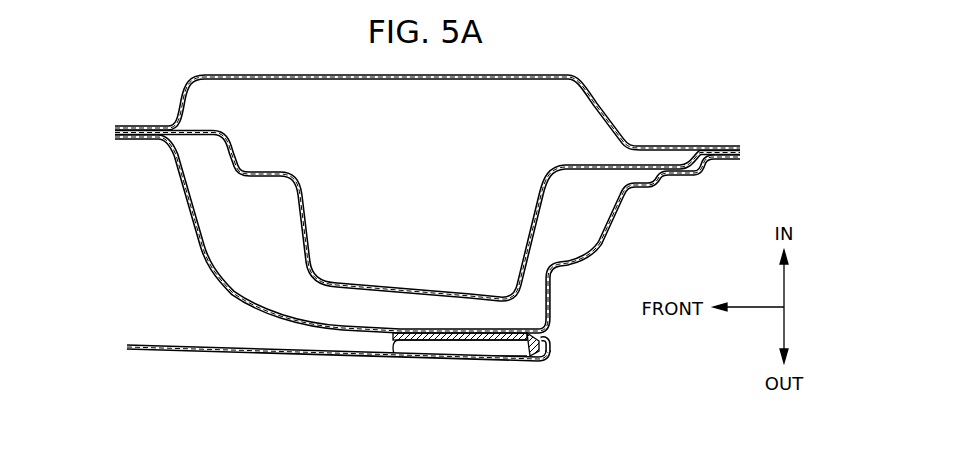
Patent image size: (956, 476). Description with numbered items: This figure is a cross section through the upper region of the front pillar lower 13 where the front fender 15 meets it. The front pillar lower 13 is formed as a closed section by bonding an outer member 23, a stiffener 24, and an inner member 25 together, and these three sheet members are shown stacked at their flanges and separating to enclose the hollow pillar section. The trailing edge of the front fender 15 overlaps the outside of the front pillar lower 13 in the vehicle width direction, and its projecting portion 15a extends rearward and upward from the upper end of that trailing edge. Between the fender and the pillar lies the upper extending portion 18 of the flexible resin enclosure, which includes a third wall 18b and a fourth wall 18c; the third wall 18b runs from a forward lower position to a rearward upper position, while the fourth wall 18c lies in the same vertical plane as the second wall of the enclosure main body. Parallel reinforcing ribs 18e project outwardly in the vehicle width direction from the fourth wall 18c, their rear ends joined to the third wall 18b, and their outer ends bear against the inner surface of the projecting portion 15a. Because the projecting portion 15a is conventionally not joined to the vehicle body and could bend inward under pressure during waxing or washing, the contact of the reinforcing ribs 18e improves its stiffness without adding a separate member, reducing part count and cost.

The front pillar lower 13 is at (406, 181).
The front fender 15 is at (337, 385).
The projecting portion 15a is at (503, 361).
The upper extending portion 18 is at (474, 349).
The third wall 18b is at (533, 338).
The fourth wall 18c is at (455, 332).
The reinforcing ribs 18e is at (457, 347).
The outer member 23 is at (222, 285).
The stiffener 24 is at (278, 174).
The inner member 25 is at (268, 74).